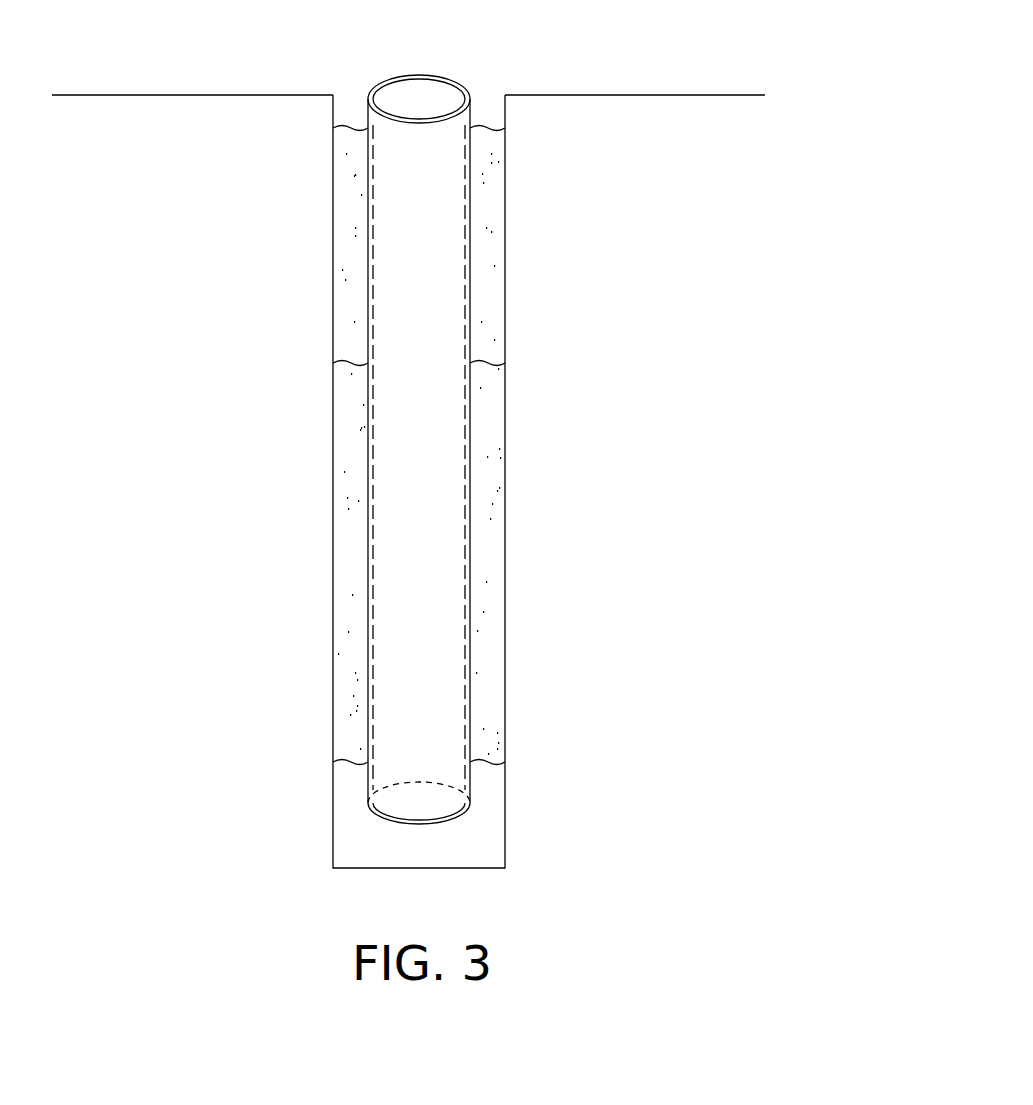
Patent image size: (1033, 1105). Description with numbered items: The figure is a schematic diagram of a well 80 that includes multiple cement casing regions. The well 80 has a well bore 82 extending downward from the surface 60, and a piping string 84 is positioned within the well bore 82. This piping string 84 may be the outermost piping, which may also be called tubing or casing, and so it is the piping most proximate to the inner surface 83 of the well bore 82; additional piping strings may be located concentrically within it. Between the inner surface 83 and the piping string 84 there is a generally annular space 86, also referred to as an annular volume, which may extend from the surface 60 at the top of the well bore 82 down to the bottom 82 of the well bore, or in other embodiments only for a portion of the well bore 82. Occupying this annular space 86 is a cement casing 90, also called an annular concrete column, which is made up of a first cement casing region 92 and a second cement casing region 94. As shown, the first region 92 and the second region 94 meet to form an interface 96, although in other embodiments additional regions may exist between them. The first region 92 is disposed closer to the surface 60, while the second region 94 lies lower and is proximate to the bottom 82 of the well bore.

The surface 60 is at (573, 95).
The well 80 is at (228, 328).
The well bore 82 is at (333, 528).
The inner surface 83 is at (503, 422).
The piping string 84 is at (472, 450).
The annular space 86 is at (350, 730).
The cement casing 90 is at (488, 697).
The first cement casing region 92 is at (495, 228).
The second cement casing region 94 is at (493, 576).
The interface 96 is at (360, 365).